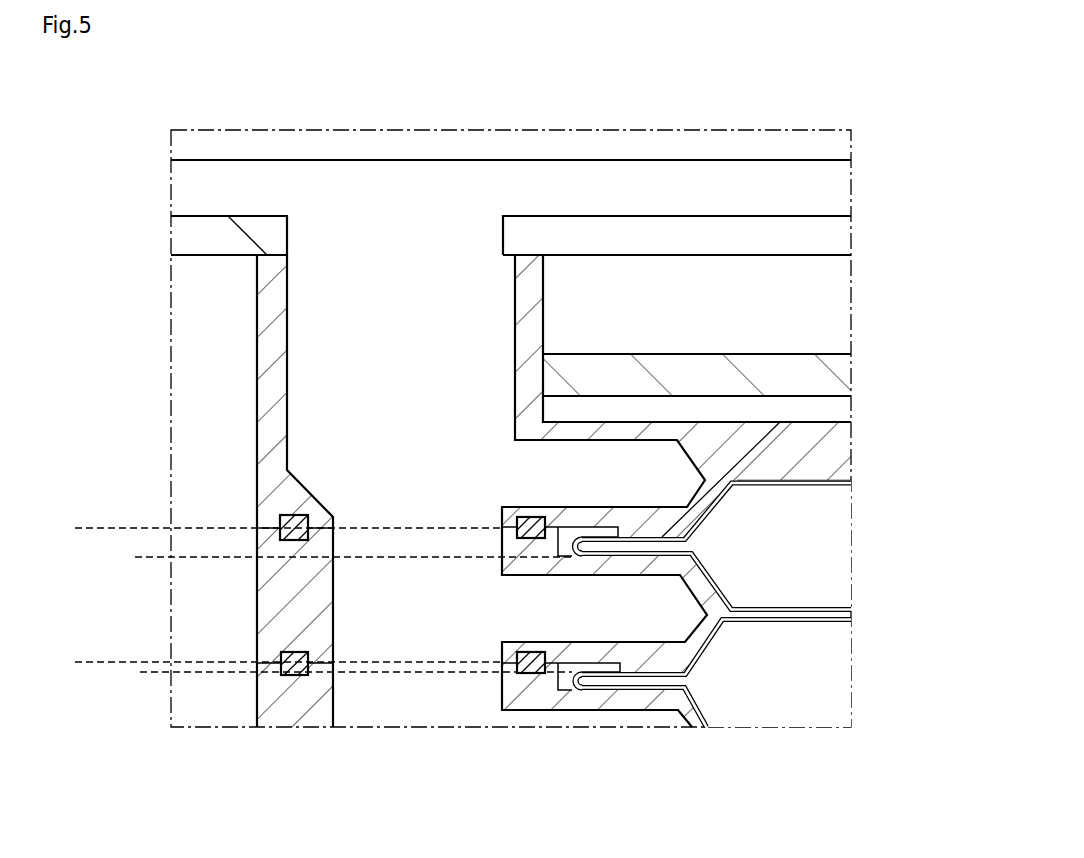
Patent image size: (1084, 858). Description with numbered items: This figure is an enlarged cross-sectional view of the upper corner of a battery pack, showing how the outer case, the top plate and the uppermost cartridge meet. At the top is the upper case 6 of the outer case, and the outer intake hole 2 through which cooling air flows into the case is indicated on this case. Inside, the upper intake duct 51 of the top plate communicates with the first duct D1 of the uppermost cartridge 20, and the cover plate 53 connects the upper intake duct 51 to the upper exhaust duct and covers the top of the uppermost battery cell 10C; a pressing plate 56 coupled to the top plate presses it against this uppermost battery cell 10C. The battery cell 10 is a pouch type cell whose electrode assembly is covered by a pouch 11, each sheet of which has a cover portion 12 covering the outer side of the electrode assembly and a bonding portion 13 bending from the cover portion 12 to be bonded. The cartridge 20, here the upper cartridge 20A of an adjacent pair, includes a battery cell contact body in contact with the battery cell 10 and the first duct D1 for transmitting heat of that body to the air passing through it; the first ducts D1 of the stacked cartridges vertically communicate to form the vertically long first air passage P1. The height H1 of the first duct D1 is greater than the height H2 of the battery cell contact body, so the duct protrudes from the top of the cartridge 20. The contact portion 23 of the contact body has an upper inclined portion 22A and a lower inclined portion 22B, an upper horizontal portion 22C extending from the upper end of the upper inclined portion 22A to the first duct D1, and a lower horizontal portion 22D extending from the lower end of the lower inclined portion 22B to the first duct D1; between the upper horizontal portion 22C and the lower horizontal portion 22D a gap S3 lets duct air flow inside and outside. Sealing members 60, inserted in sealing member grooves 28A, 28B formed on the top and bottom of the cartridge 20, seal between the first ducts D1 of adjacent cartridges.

The outer intake hole 2 is at (379, 240).
The upper case 6 is at (203, 227).
The battery cell 10 is at (880, 638).
The uppermost battery cell 10C is at (820, 501).
The pouch 11 is at (790, 617).
The cover portion 12 is at (792, 480).
The bonding portion 13 is at (650, 540).
The cartridge 20 is at (205, 519).
The upper cartridge 20A is at (267, 543).
The upper inclined portion 22A is at (700, 590).
The lower inclined portion 22B is at (703, 628).
The upper horizontal portion 22C is at (620, 566).
The lower horizontal portion 22D is at (657, 655).
The contact portion 23 is at (768, 604).
The sealing member groove 28A is at (300, 677).
The sealing member groove 28B is at (290, 652).
The upper intake duct 51 is at (429, 322).
The cover plate 53 is at (706, 432).
The pressing plate 56 is at (603, 373).
The sealing member 60 is at (292, 676).
The first duct D1 is at (434, 578).
The first air passage P1 is at (400, 693).
The gap S3 is at (617, 613).
The height of the duct H1 is at (81, 528).
The height of the battery cell contact body H2 is at (143, 557).